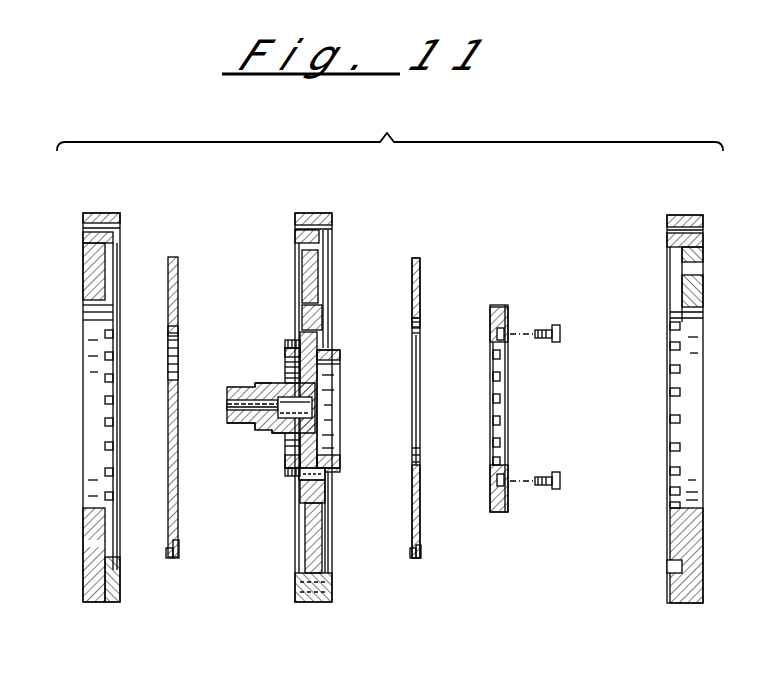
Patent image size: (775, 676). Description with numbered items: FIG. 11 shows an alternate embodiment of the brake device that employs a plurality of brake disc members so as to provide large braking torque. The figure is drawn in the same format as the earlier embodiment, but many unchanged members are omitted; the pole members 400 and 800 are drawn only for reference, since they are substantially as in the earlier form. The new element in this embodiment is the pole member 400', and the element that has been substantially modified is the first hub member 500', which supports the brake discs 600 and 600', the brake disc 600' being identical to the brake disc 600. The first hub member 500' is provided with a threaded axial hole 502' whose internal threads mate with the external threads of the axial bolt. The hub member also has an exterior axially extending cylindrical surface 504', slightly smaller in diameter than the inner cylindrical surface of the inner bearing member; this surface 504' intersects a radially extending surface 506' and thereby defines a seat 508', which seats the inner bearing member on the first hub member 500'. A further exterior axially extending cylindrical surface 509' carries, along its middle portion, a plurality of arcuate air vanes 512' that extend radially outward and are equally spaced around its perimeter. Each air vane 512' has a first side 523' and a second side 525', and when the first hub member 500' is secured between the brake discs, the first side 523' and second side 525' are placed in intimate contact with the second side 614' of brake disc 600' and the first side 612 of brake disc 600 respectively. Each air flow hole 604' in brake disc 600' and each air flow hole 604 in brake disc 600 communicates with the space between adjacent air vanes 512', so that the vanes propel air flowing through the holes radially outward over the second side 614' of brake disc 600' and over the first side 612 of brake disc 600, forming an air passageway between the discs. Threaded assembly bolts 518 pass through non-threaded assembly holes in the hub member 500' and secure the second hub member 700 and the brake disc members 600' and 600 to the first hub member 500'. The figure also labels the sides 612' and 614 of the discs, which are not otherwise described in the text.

The pole member 400 is at (101, 386).
The pole member 400' is at (287, 386).
The brake disc 600 is at (415, 365).
The brake disc 600' is at (185, 364).
The second hub member 700 is at (500, 264).
The pole member 800 is at (667, 200).
The first hub member 500' is at (271, 398).
The threaded axial hole 502' is at (249, 408).
The exterior axially extending cylindrical surface 504' is at (227, 441).
The radially extending surface 506' is at (254, 460).
The seat 508' is at (239, 370).
The exterior axially extending cylindrical surface 509' is at (307, 412).
The arcuate air vanes 512' is at (345, 505).
The first side 523' is at (270, 514).
The second side 525' is at (345, 306).
The air flow hole 604 is at (441, 316).
The air flow holes 604' is at (150, 323).
The first side 612 is at (393, 573).
The plate edge 612' is at (150, 572).
The plate edge 614 is at (443, 566).
The second side 614' is at (205, 568).
The assembly bolts 518 is at (560, 333).